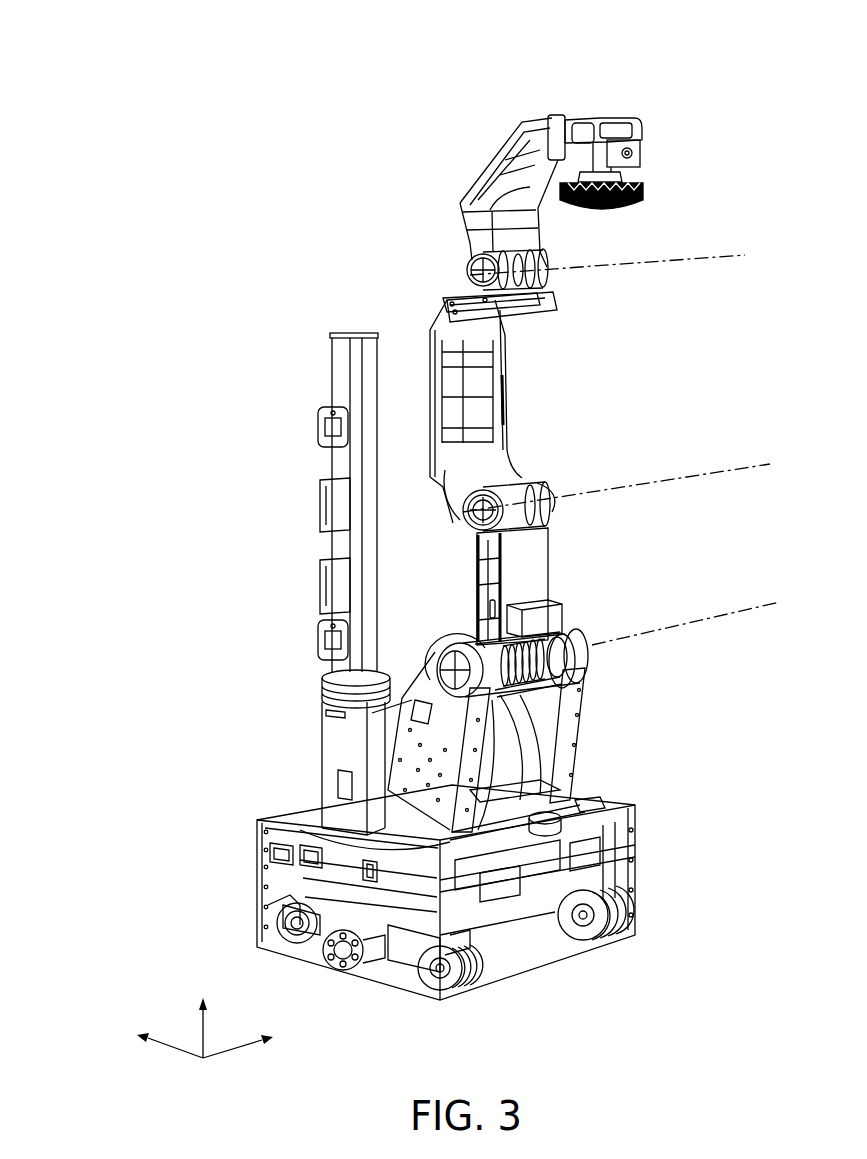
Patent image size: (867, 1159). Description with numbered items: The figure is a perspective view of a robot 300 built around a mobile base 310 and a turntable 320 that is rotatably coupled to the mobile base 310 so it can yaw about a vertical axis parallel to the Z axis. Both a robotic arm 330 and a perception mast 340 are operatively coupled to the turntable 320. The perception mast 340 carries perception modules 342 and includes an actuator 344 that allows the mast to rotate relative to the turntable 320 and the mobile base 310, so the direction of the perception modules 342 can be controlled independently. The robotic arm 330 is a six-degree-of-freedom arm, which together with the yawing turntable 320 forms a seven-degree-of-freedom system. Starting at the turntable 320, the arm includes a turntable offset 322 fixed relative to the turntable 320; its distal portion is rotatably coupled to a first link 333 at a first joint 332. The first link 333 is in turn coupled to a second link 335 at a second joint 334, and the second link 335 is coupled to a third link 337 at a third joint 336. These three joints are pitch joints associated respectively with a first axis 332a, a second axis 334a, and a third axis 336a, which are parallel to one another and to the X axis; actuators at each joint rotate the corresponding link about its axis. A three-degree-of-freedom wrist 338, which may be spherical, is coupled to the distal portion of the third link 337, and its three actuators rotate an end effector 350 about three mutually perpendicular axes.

The robot 300 is at (448, 532).
The mobile base 310 is at (511, 877).
The turntable 320 is at (630, 786).
The turntable offset 322 is at (575, 755).
The robotic arm 330 is at (547, 403).
The first joint 332 is at (622, 656).
The first axis 332a is at (730, 611).
The first link 333 is at (555, 572).
The second joint 334 is at (572, 476).
The second axis 334a is at (727, 470).
The second link 335 is at (507, 417).
The third joint 336 is at (588, 282).
The third axis 336a is at (717, 258).
The third link 337 is at (460, 192).
The wrist 338 is at (680, 136).
The end effector 350 is at (678, 193).
The perception mast 340 is at (302, 584).
The perception modules 342 is at (292, 427).
The actuator 344 is at (295, 698).